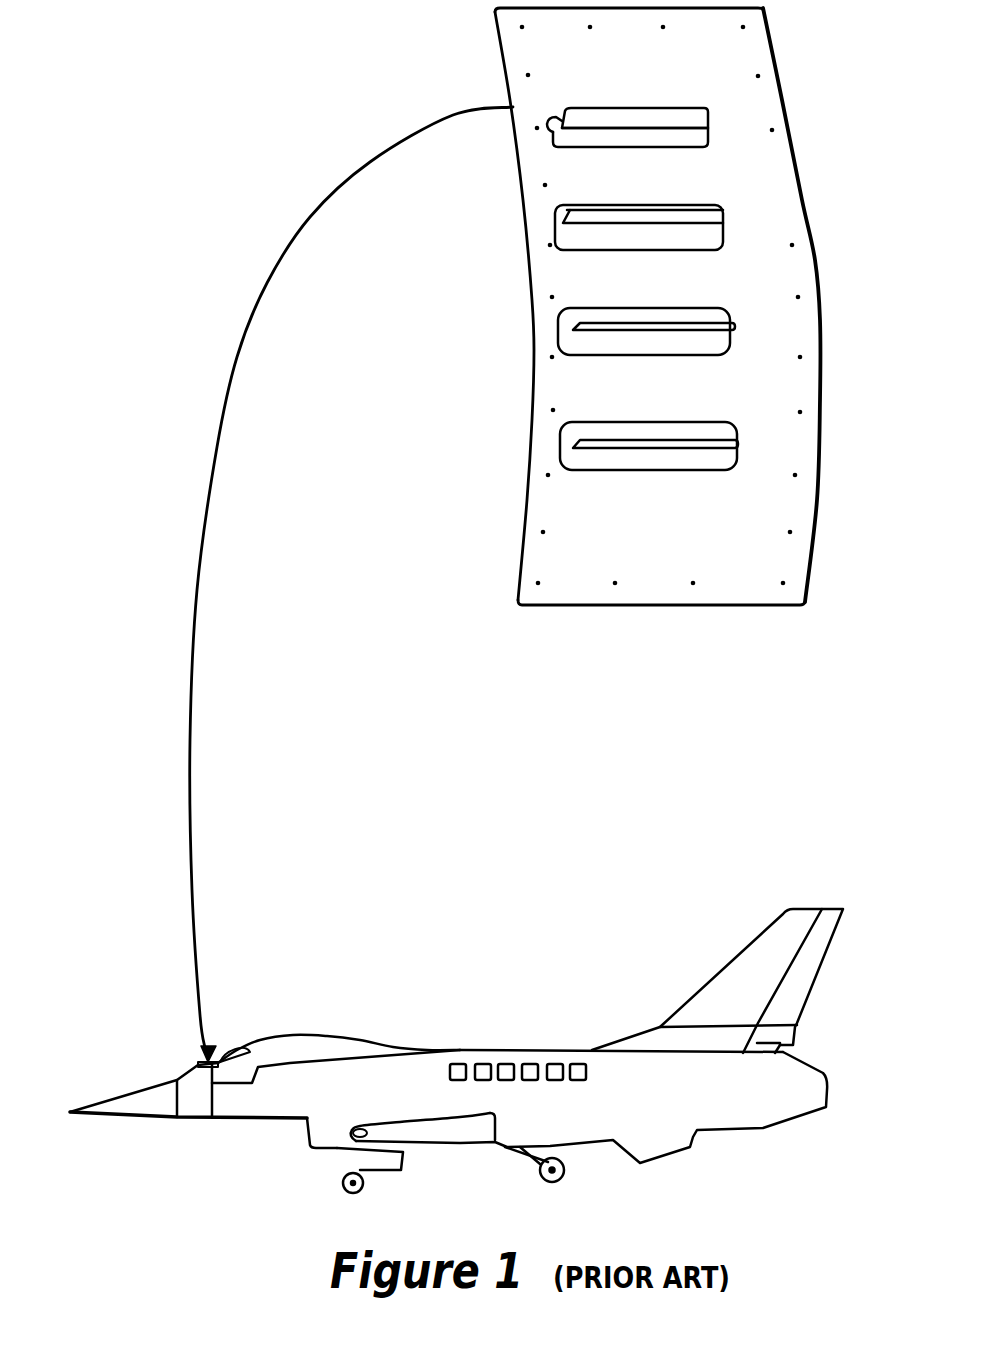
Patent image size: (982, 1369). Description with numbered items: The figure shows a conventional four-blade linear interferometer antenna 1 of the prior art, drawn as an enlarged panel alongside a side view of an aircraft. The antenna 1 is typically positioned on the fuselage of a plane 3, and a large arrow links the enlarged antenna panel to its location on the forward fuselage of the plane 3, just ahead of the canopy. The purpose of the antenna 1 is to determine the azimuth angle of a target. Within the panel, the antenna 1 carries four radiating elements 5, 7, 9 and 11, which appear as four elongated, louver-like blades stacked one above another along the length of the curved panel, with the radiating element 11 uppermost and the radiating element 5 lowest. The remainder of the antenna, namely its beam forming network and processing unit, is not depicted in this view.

The linear interferometer antenna 1 is at (817, 263).
The plane 3 is at (460, 1048).
The radiating element 5 is at (568, 447).
The radiating element 7 is at (567, 321).
The radiating element 9 is at (560, 228).
The radiating element 11 is at (556, 135).